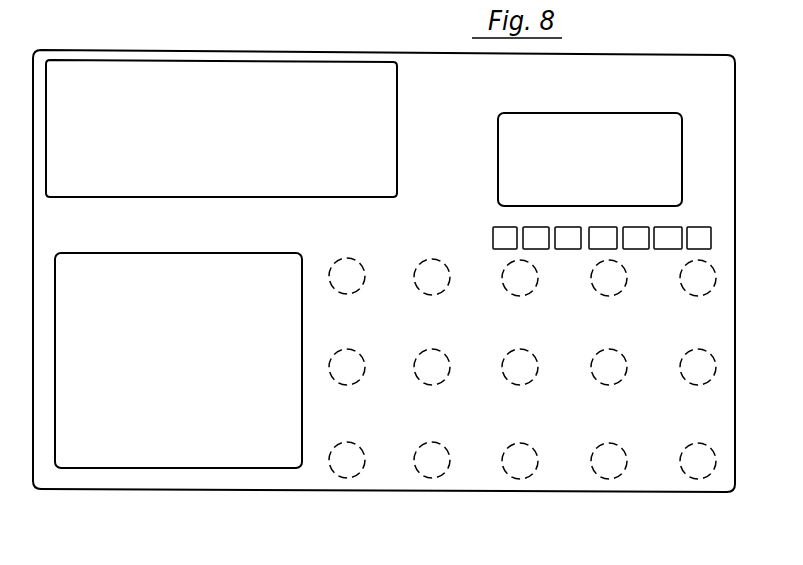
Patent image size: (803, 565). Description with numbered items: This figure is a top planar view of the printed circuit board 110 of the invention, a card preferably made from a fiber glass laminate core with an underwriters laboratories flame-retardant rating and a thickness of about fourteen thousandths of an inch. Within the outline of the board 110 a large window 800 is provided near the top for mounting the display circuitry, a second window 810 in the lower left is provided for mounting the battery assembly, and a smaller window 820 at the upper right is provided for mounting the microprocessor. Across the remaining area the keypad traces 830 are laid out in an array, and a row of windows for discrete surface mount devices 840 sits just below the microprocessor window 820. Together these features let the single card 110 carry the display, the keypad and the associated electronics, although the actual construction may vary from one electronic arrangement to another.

The printed circuit board 110 is at (222, 491).
The window 800 is at (230, 145).
The window 810 is at (188, 380).
The window 820 is at (609, 169).
The keypad traces 830 is at (503, 358).
The windows for discrete surface mount devices 840 is at (662, 250).